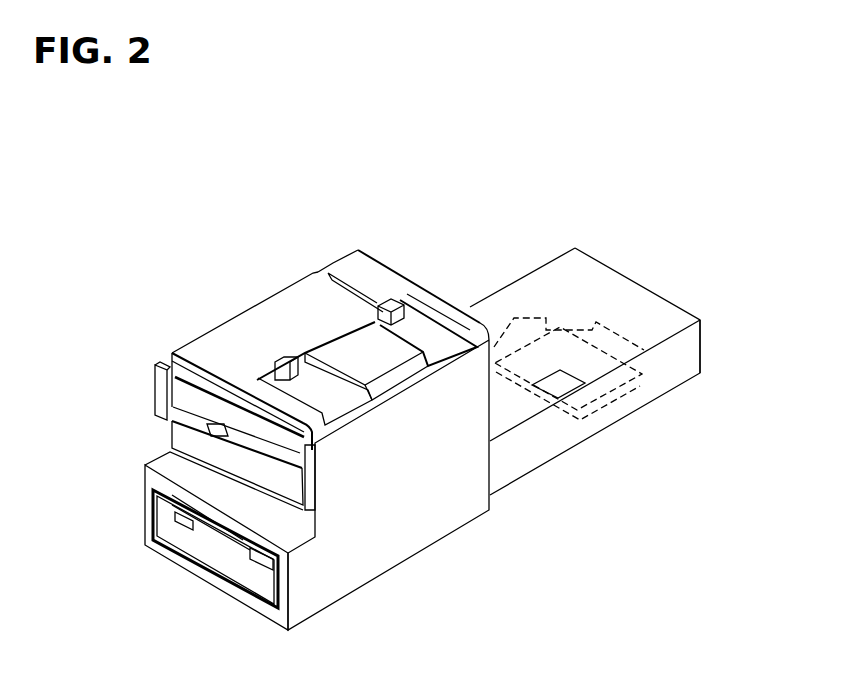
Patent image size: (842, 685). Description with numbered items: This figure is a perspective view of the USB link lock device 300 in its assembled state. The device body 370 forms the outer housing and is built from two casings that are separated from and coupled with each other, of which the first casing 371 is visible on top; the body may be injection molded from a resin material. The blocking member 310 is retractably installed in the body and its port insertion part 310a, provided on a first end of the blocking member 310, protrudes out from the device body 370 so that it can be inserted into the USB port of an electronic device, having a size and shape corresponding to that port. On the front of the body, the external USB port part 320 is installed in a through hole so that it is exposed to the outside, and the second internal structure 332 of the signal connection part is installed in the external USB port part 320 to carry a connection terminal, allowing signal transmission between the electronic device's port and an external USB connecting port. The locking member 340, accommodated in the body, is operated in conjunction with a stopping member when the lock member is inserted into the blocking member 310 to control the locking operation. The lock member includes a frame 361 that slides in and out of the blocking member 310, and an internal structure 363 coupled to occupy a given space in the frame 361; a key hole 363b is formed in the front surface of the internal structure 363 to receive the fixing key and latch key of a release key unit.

The USB link lock device 300 is at (586, 184).
The blocking member 310 is at (712, 339).
The port insertion part 310a is at (663, 384).
The external USB port part 320 is at (152, 388).
The second internal structure 332 is at (177, 391).
The locking member 340 is at (540, 400).
The frame 361 is at (150, 513).
The internal structure 363 is at (252, 588).
The key hole 363b is at (165, 530).
The device body 370 is at (386, 254).
The first casing 371 is at (277, 305).